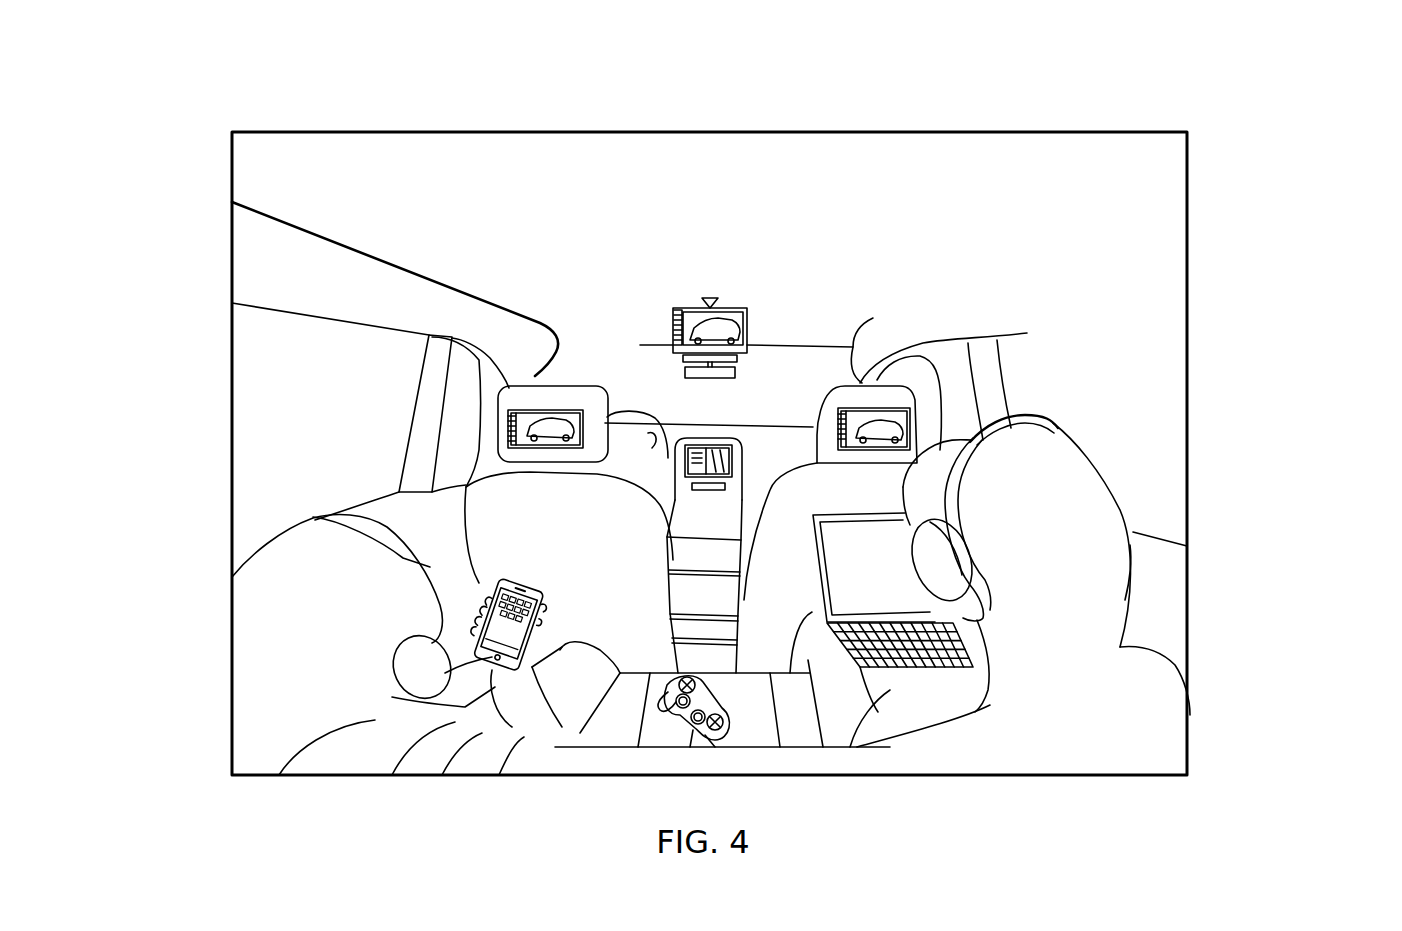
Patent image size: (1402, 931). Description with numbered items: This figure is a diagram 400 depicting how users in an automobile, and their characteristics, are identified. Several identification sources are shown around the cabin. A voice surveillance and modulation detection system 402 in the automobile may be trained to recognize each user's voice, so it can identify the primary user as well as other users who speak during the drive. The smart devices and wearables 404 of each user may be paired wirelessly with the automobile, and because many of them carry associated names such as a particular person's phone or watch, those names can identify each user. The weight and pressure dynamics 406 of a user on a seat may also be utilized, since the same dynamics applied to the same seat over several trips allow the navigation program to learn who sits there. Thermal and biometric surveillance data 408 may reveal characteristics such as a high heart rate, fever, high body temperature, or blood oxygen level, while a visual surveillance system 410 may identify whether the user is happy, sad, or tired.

The diagram 400 is at (1142, 67).
The voice surveillance and modulation detection system 402 is at (688, 462).
The smart devices and wearables 404 is at (493, 578).
The weight and pressure dynamics 406 is at (670, 752).
The thermal and biometric surveillance data 408 is at (1211, 505).
The visual surveillance system 410 is at (747, 314).